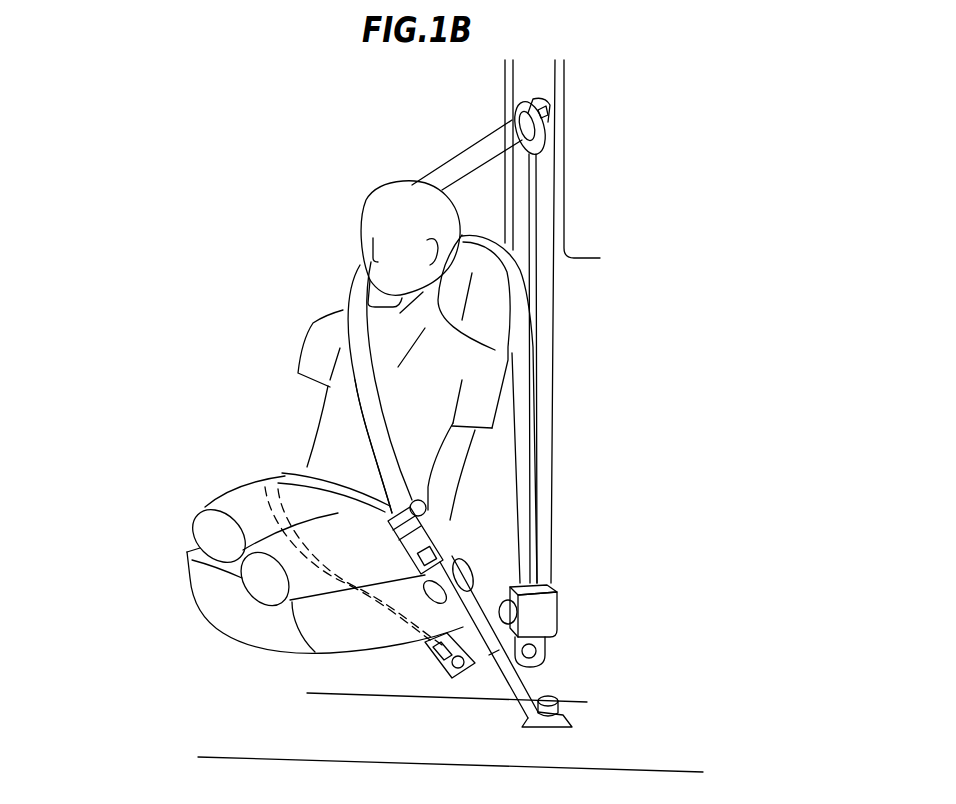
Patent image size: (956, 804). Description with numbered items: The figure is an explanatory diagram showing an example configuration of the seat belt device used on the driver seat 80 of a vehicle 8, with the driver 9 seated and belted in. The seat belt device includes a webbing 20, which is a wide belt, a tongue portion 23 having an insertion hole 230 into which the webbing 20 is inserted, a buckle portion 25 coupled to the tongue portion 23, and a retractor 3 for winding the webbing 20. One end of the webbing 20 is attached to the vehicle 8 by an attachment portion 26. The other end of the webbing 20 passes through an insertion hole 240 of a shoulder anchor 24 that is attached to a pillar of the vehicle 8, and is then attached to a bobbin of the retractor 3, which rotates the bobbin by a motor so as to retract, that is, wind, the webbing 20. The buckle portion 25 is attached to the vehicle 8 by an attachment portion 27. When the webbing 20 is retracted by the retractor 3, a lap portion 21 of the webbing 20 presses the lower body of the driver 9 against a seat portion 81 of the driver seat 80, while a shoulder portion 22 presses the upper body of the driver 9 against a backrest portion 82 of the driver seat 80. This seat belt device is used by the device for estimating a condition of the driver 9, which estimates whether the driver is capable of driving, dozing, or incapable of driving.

The retractor 3 is at (540, 617).
The vehicle 8 is at (535, 78).
The driver 9 is at (483, 368).
The webbing 20 is at (363, 423).
The lap portion 21 is at (300, 470).
The shoulder portion 22 is at (360, 293).
The tongue portion 23 is at (413, 540).
The shoulder anchor 24 is at (538, 133).
The insertion hole 240 is at (513, 125).
The buckle portion 25 is at (450, 563).
The attachment portion 26 is at (447, 660).
The attachment portion 27 is at (525, 698).
The driver seat 80 is at (200, 577).
The seat portion 81 is at (200, 553).
The backrest portion 82 is at (515, 398).
The insertion hole 230 is at (405, 520).